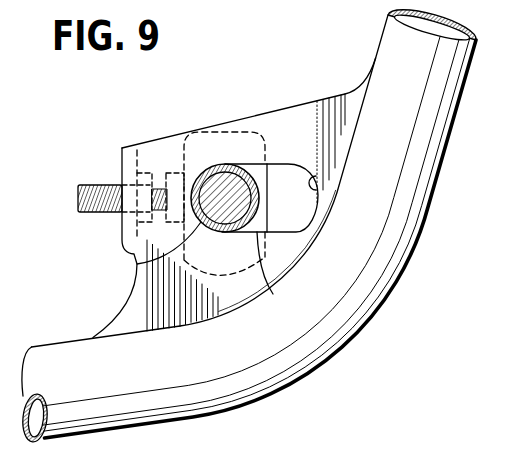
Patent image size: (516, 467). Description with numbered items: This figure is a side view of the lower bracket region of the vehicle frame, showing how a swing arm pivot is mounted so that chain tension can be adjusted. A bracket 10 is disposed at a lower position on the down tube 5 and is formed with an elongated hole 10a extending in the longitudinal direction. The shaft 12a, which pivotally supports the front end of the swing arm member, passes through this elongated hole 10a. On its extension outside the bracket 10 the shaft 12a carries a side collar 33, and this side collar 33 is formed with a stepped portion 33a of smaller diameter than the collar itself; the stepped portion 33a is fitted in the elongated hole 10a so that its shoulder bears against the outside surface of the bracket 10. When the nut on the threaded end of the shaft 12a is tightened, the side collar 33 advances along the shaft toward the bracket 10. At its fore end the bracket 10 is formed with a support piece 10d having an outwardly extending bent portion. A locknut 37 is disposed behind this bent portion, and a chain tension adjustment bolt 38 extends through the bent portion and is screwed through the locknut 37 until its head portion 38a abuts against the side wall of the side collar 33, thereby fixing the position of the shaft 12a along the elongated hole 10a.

The down tube 5 is at (412, 226).
The bracket 10 is at (280, 124).
The elongated hole 10a is at (316, 186).
The support piece 10d is at (124, 166).
The shaft 12a is at (133, 261).
The side collar 33 is at (258, 207).
The stepped portion 33a is at (273, 294).
The locknut 37 is at (147, 174).
The chain tension adjustment bolt 38 is at (84, 208).
The head portion 38a is at (176, 173).